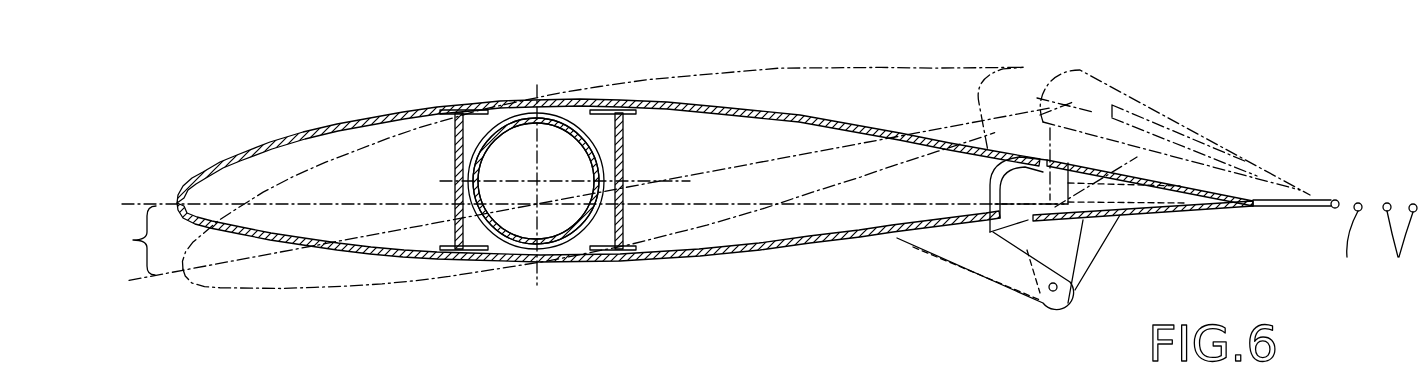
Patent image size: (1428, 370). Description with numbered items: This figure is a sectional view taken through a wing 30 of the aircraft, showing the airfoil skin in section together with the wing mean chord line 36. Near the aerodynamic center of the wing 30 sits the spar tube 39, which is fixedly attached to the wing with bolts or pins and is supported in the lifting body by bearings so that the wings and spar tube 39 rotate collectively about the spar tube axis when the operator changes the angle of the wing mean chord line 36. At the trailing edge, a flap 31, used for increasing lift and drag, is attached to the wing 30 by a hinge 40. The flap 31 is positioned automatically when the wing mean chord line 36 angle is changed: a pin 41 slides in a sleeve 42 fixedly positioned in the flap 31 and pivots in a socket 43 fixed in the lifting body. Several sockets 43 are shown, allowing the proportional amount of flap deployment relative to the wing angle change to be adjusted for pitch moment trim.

The wing 30 is at (783, 70).
The flap 31 is at (1157, 97).
The wing mean chord line 36 is at (127, 240).
The spar tube 39 is at (587, 250).
The hinge 40 is at (978, 282).
The pin 41 is at (1290, 210).
The sleeve 42 is at (1120, 213).
The socket 43 is at (1375, 247).